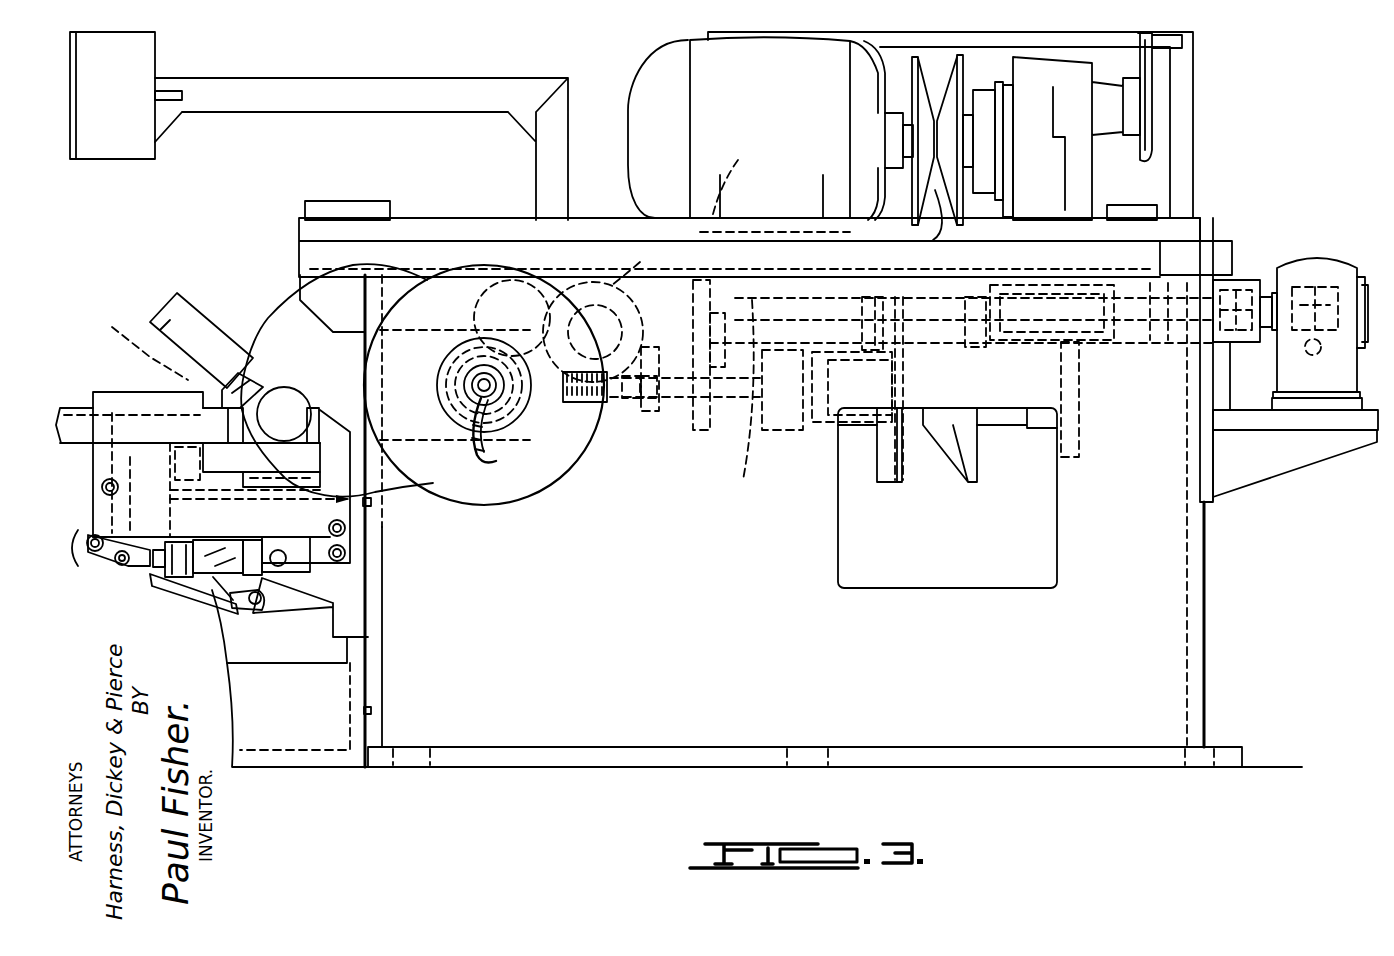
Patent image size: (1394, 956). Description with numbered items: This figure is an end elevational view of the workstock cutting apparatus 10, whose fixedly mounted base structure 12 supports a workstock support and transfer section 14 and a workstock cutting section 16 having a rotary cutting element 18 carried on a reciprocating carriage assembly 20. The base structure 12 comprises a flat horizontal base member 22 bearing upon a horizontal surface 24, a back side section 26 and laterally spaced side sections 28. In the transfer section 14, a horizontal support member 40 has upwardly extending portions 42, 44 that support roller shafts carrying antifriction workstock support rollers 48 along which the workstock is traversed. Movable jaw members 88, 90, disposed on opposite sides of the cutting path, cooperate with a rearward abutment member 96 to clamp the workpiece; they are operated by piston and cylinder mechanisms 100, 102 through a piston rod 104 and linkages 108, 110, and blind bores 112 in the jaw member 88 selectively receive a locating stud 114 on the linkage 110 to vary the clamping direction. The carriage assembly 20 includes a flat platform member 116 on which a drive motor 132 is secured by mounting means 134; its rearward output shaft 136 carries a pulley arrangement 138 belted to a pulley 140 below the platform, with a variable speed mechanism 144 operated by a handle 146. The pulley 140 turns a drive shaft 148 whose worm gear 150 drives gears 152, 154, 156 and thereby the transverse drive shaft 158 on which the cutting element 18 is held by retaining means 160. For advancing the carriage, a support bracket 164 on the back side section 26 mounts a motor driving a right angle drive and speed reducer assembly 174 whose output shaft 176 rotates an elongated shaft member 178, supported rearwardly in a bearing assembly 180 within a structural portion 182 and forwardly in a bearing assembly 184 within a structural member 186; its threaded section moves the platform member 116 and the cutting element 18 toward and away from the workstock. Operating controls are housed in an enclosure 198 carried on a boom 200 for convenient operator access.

The workstock cutting apparatus 10 is at (440, 803).
The base structure 12 is at (1112, 772).
The workstock support and transfer section 14 is at (230, 306).
The workstock cutting section 16 is at (602, 452).
The rotary cutting element 18 is at (518, 497).
The carriage assembly 20 is at (630, 212).
The base member 22 is at (646, 768).
The horizontal surface 24 is at (1268, 750).
The back side section 26 is at (1206, 592).
The side sections 28 is at (1032, 750).
The support member 40 is at (197, 492).
The upwardly extending portion 42 is at (96, 493).
The upwardly extending portion 44 is at (452, 419).
The workstock support roller 48 is at (260, 489).
The movable jaw member 88 is at (173, 298).
The movable jaw member 90 is at (85, 408).
The abutment member 96 is at (320, 405).
The actuating piston and cylinder mechanism 100 is at (178, 604).
The actuating piston and cylinder mechanism 102 is at (210, 604).
The piston rod 104 is at (152, 588).
The linkage 108 is at (115, 572).
The linkage 110 is at (100, 464).
The blind bores 112 is at (234, 288).
The locating stud 114 is at (126, 340).
The platform member 116 is at (1222, 244).
The drive motor 132 is at (634, 80).
The mounting means 134 is at (730, 160).
The output shaft 136 is at (885, 137).
The drive sheave or pulley arrangement 138 is at (933, 240).
The drive sheave or pulley 140 is at (910, 455).
The variable speed or adjustment mechanism 144 is at (1085, 128).
The manually engageable handle 146 is at (1150, 80).
The drive shaft 148 is at (961, 399).
The worm gear 150 is at (612, 400).
The drive gear 152 is at (623, 259).
The drive gear 154 is at (505, 280).
The drive gear 156 is at (455, 352).
The drive shaft 158 is at (507, 438).
The retaining means 160 is at (470, 388).
The support bracket 164 is at (1262, 472).
The right angle drive and speed reducer assembly 174 is at (1328, 268).
The output shaft 176 is at (1270, 292).
The rotatable shaft member 178 is at (1178, 330).
The bearing assembly 180 is at (1250, 278).
The structural portion 182 is at (1262, 342).
The bearing assembly 184 is at (770, 259).
The structural member 186 is at (685, 369).
The enclosure 198 is at (124, 158).
The boom 200 is at (360, 100).